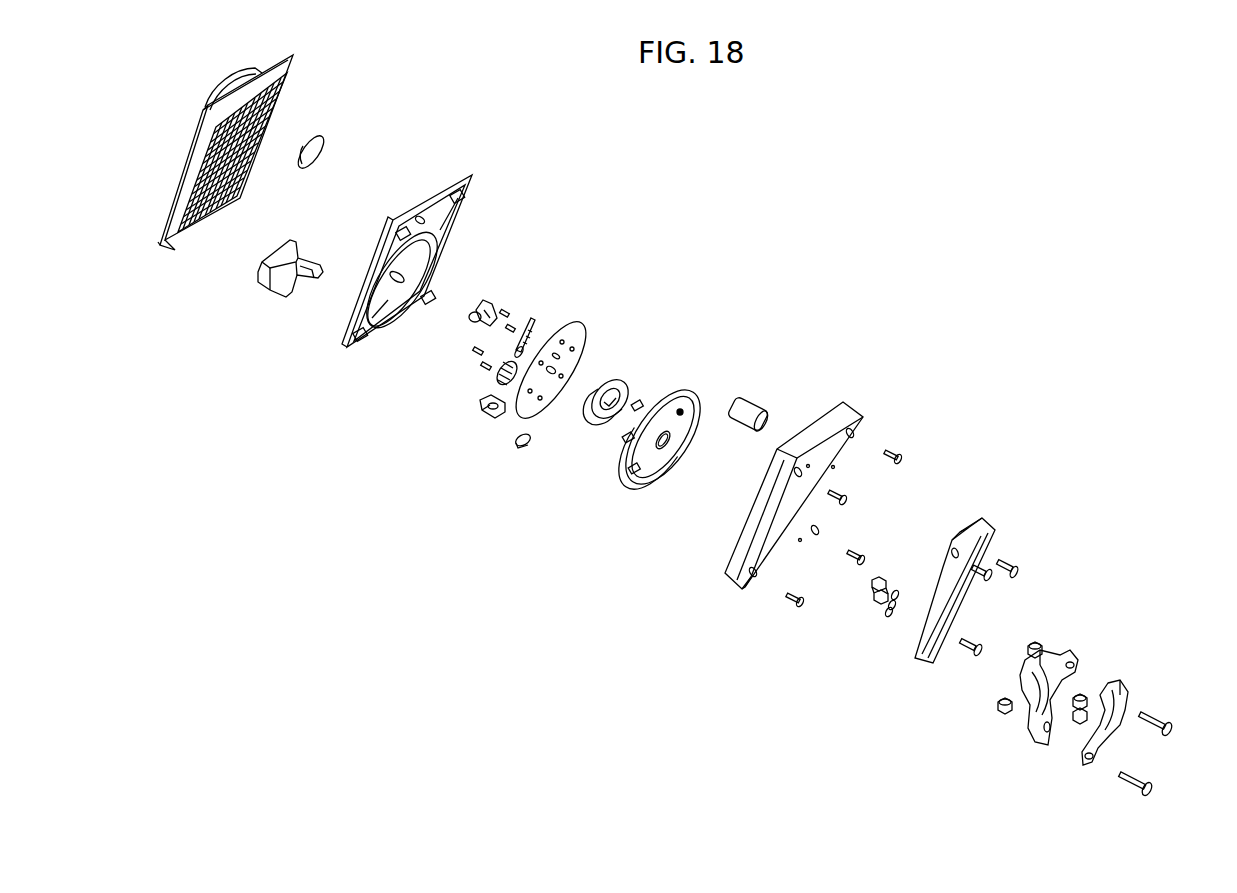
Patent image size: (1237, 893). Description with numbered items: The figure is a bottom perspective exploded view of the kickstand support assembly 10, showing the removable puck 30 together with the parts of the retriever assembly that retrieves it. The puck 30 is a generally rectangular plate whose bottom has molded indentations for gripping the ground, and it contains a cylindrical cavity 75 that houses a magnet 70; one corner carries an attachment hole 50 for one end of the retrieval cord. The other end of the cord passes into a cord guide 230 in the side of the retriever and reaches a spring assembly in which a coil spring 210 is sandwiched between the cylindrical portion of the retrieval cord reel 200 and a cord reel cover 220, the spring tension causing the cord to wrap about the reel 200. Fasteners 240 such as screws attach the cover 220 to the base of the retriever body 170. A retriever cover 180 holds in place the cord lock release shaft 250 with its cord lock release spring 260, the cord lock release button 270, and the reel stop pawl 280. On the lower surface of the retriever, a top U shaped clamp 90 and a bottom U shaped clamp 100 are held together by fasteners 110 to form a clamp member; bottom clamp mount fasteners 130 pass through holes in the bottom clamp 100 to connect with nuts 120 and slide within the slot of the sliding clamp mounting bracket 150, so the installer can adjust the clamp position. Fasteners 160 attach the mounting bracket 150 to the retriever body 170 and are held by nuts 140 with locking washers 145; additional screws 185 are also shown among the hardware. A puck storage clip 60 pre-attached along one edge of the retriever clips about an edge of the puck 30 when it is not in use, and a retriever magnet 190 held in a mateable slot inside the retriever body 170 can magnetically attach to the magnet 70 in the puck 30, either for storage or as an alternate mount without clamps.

The kickstand support system assembly 10 is at (1028, 182).
The removable puck 30 is at (241, 153).
The attachment hole 50 is at (263, 186).
The puck storage clip 60 is at (296, 287).
The magnet 70 is at (350, 145).
The cylindrical cavity 75 is at (273, 150).
The top U shaped clamp 90 is at (1136, 719).
The bottom U shaped clamp 100 is at (1015, 709).
The fasteners 110 is at (1105, 755).
The nuts 120 is at (985, 691).
The bottom clamp mount fasteners 130 is at (1115, 687).
The nuts 140 is at (815, 641).
The locking washers 145 is at (837, 660).
The sliding clamp mounting bracket 150 is at (996, 573).
The fasteners 160 is at (1053, 558).
The retriever body 170 is at (756, 514).
The retriever cover 180 is at (443, 246).
The screws 185 is at (844, 550).
The retriever magnet 190 is at (787, 393).
The retrieval cord reel 200 is at (628, 462).
The coil spring 210 is at (565, 442).
The cord reel cover 220 is at (597, 369).
The cord guide 230 is at (482, 458).
The fasteners 240 is at (439, 362).
The cord lock release shaft 250 is at (564, 323).
The cord lock release spring 260 is at (464, 379).
The cord lock release button 270 is at (458, 421).
The reel stop pawl 280 is at (521, 295).